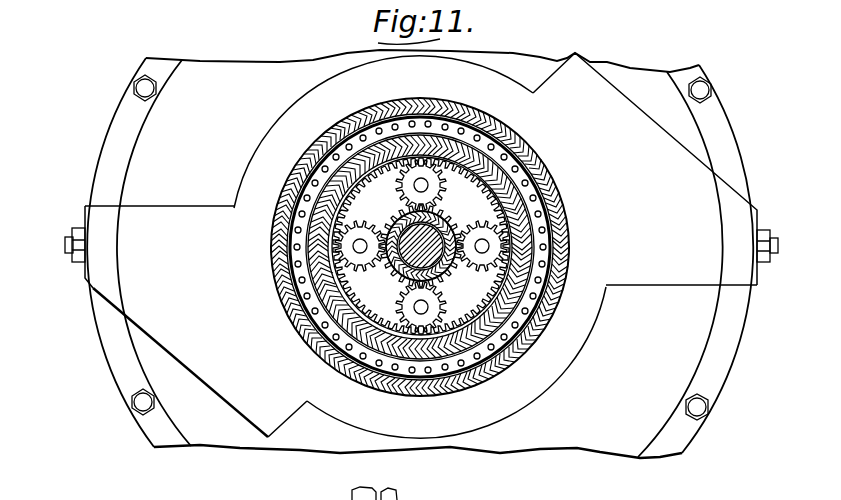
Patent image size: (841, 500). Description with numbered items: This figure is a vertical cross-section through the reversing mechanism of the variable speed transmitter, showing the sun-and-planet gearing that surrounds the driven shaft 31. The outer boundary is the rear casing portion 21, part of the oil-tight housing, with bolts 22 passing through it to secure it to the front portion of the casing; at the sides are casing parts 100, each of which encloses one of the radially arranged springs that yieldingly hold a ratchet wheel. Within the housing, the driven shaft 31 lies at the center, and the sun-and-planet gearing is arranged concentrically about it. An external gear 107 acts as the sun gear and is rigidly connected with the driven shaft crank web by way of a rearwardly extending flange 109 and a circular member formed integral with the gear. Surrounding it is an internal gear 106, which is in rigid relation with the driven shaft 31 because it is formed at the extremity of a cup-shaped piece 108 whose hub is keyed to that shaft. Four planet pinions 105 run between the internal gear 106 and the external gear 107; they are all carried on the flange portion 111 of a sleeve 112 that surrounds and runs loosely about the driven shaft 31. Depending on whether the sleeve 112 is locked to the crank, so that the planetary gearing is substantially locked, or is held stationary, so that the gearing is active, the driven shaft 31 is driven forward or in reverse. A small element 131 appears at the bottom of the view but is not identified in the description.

The rear casing portion 21 is at (112, 127).
The bolts 22 is at (135, 84).
The casing part 100 is at (720, 193).
The driven shaft 31 is at (400, 258).
The planet pinions 105 is at (442, 180).
The internal gear 106 is at (510, 256).
The external gear 107 is at (508, 211).
The cup-shaped piece 108 is at (350, 189).
The rearwardly extending flange 109 is at (333, 238).
The flange portion 111 is at (350, 322).
The sleeve 112 is at (318, 300).
The bracket 131 is at (395, 490).